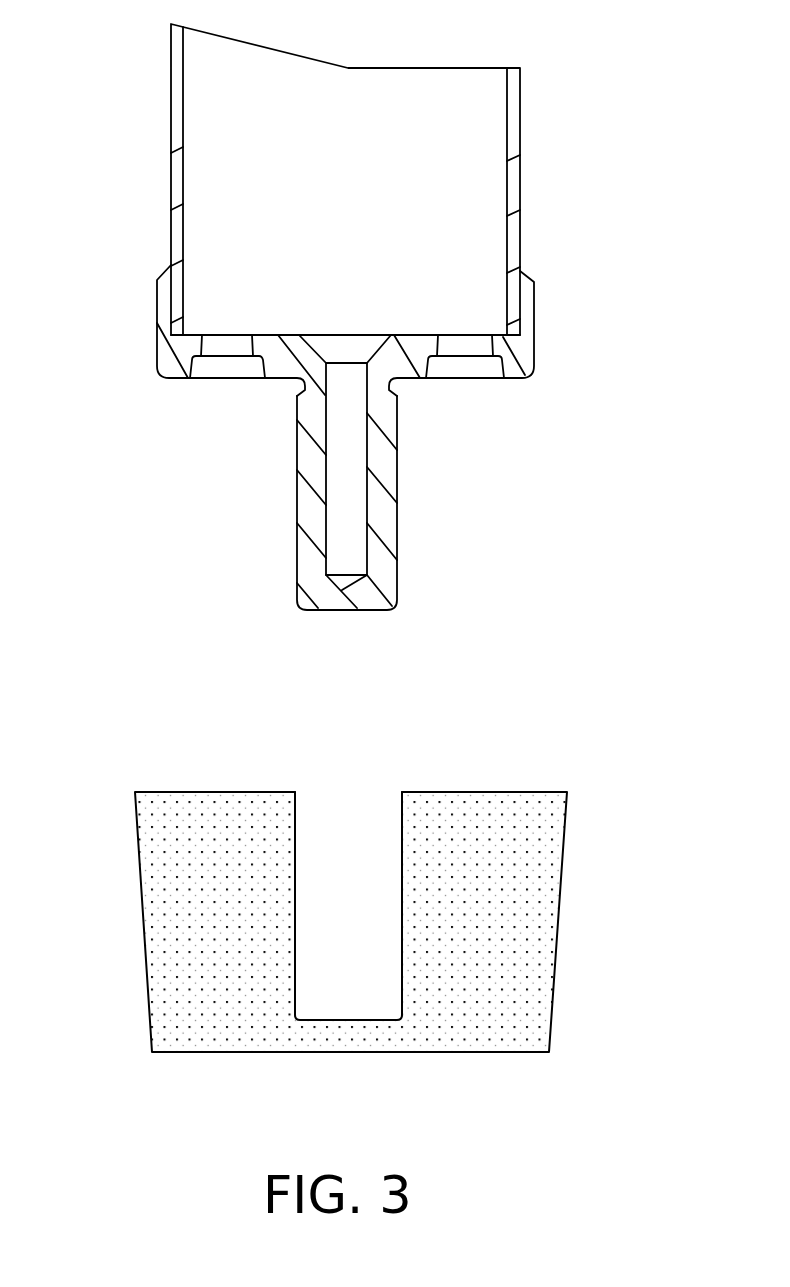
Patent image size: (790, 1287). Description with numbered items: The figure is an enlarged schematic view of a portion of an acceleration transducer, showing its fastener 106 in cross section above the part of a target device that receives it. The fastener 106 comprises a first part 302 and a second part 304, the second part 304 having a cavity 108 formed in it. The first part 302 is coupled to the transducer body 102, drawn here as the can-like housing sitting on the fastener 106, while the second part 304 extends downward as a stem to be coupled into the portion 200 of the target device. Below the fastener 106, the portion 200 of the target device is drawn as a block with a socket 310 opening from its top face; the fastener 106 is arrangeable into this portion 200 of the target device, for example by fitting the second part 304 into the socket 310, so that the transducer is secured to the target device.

The transducer body 102 is at (178, 193).
The fastener 106 is at (542, 335).
The cavity 108 is at (342, 522).
The portion of the target device 200 is at (535, 1011).
The first part 302 is at (165, 348).
The second part 304 is at (380, 505).
The socket 310 is at (355, 952).